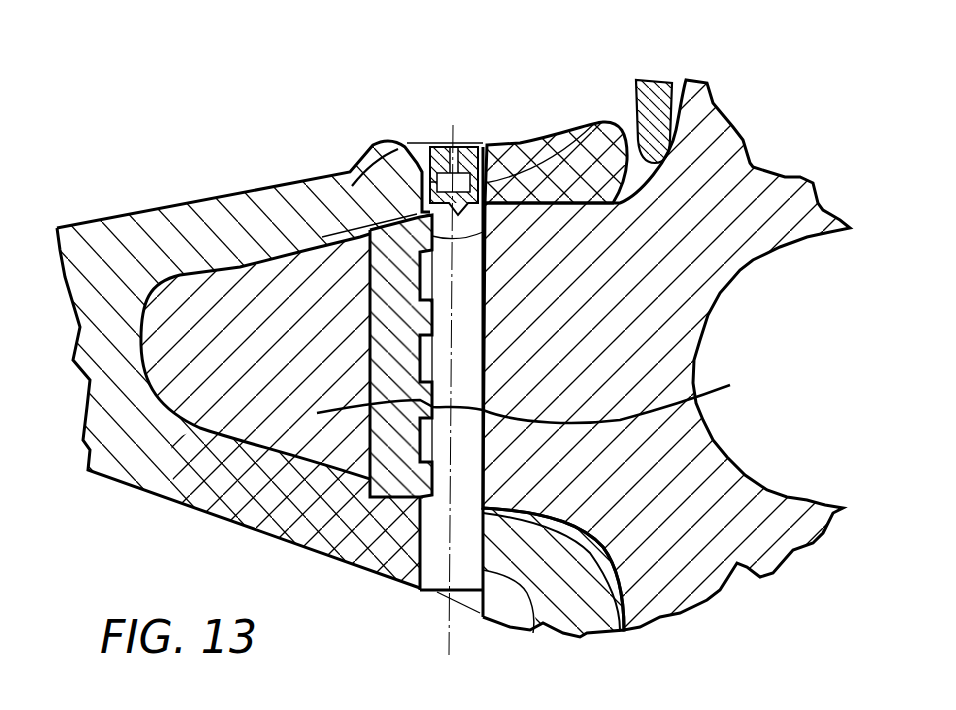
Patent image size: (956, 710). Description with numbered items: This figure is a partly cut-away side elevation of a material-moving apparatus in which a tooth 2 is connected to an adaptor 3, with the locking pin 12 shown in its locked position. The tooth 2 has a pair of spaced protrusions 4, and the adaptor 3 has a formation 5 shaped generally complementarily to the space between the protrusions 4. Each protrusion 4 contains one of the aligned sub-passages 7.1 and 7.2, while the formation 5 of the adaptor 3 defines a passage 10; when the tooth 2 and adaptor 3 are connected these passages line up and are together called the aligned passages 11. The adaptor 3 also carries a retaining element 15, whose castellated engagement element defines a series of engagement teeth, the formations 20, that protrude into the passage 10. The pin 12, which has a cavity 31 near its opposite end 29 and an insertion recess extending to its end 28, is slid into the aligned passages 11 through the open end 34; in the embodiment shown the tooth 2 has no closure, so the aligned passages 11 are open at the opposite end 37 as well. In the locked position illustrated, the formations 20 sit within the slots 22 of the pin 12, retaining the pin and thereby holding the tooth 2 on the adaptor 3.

The tooth 2 is at (112, 220).
The adaptor 3 is at (703, 565).
The protrusions 4 is at (247, 207).
The formation 5 is at (197, 313).
The sub-passage 7.1 is at (505, 140).
The sub-passage 7.2 is at (533, 633).
The passage 10 is at (483, 393).
The aligned passages 11 is at (428, 135).
The pin 12 is at (470, 335).
The retaining element 15 is at (290, 512).
The formations 20 is at (372, 190).
The slot 22 is at (612, 88).
The end 28 is at (433, 593).
The opposite end 29 is at (466, 145).
The cavity 31 is at (402, 142).
The open end 34 is at (486, 144).
The opposite end 37 is at (470, 612).